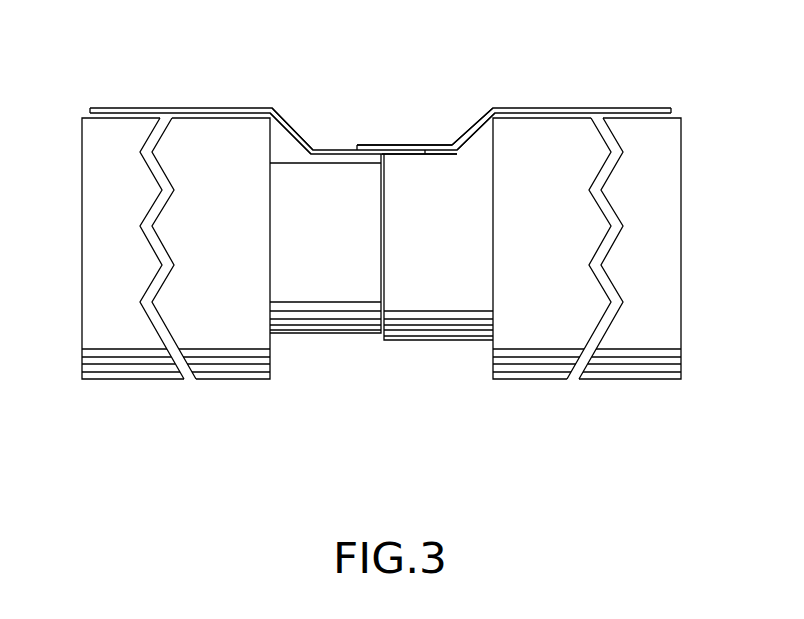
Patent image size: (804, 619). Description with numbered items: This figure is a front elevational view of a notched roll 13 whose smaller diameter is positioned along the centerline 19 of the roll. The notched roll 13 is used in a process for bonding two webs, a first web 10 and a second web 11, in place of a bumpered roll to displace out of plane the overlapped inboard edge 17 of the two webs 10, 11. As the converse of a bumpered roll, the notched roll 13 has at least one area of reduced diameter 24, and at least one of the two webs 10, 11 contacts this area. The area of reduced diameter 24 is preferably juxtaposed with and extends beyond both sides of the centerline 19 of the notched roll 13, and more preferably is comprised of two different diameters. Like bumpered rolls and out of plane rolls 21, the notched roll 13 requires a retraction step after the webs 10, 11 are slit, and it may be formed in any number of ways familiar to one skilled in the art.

The first web 10 is at (127, 107).
The second web 11 is at (625, 107).
The notched roll 13 is at (529, 485).
The inboard edge 17 is at (367, 146).
The centerline 19 is at (382, 269).
The out of plane rolls 21 is at (295, 126).
The area of reduced diameter 24 is at (371, 366).